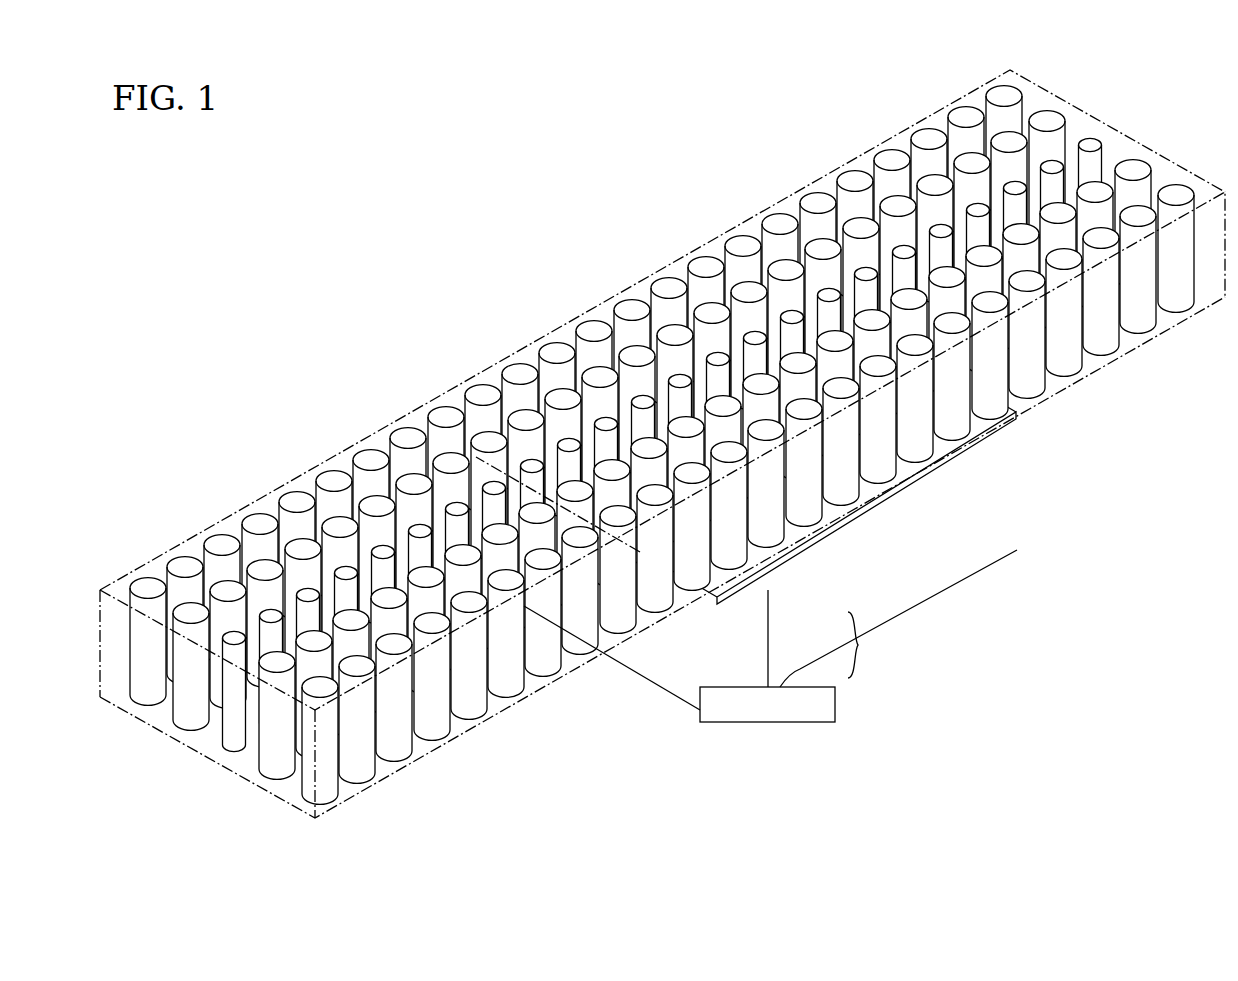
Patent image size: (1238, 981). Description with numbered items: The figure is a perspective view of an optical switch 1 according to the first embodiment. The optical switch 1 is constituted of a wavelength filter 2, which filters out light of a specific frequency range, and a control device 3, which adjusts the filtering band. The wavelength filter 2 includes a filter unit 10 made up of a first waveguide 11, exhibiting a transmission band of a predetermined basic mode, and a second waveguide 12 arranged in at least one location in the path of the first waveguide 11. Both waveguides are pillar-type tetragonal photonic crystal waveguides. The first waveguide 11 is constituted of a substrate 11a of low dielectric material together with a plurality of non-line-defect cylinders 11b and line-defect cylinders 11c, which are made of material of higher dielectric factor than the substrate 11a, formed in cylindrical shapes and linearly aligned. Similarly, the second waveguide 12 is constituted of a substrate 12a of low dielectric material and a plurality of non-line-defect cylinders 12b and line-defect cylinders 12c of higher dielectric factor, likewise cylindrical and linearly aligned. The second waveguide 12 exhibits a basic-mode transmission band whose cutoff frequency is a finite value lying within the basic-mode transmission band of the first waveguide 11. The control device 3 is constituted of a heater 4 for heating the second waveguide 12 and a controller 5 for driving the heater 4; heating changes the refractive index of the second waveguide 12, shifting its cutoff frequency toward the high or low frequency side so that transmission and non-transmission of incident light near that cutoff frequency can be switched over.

The optical switch 1 is at (662, 430).
The wavelength filter 2 is at (828, 504).
The control device 3 is at (770, 636).
The heater 4 is at (793, 577).
The controller 5 is at (803, 670).
The filter unit 10 is at (636, 650).
The first waveguide 11 is at (662, 444).
The substrate 11a is at (540, 683).
The non-line-defect cylinders 11b is at (658, 427).
The line-defect cylinders 11c is at (648, 437).
The second waveguide 12 is at (828, 542).
The substrate 12a is at (795, 547).
The non-line-defect cylinders 12b is at (648, 437).
The line-defect cylinders 12c is at (685, 382).